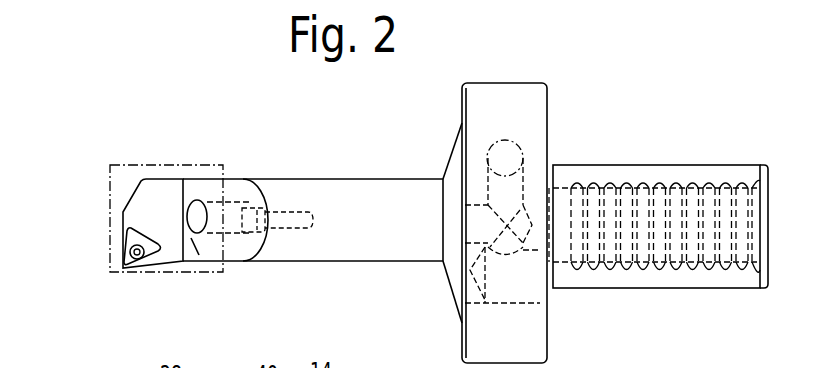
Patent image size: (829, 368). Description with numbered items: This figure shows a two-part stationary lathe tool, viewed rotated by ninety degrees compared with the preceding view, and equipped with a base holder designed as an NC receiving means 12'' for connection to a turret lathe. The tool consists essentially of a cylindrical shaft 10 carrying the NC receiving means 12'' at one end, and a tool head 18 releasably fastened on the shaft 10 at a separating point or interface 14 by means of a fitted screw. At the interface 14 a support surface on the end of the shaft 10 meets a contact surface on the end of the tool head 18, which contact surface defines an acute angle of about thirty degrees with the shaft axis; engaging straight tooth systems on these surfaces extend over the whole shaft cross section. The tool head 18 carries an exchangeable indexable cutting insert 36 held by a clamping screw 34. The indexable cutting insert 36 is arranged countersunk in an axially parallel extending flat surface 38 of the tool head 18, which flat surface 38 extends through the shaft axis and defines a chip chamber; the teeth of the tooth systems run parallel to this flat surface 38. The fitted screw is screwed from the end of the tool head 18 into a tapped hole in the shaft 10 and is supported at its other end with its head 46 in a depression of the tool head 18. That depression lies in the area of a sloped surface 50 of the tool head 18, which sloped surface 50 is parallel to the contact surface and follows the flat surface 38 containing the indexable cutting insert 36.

The cylindrical shaft 10 is at (366, 252).
The NC receiving means 12'' is at (658, 173).
The separating point or interface 14 is at (260, 178).
The tool head 18 is at (155, 206).
The clamping screw 34 is at (118, 270).
The indexable cutting insert 36 is at (123, 240).
The flat surface 38 is at (170, 193).
The head 46 is at (203, 236).
The sloped surface 50 is at (200, 262).